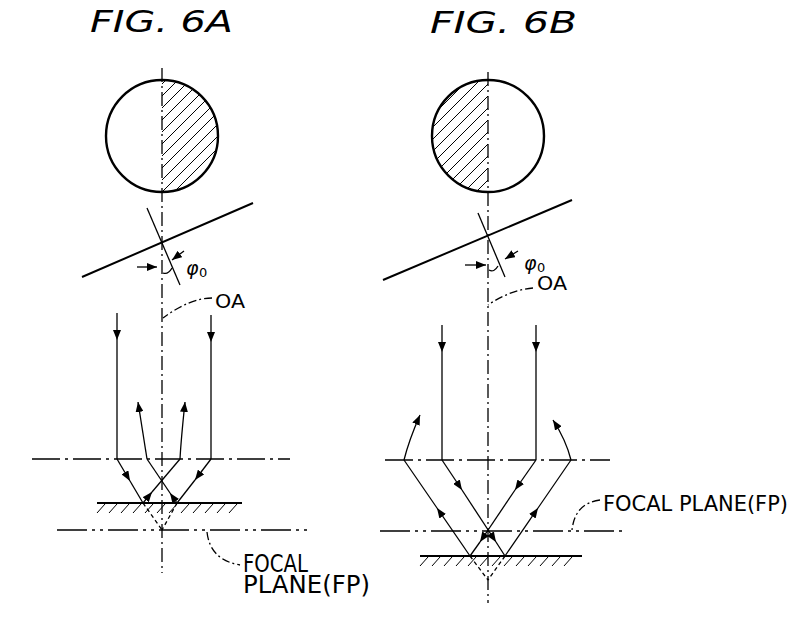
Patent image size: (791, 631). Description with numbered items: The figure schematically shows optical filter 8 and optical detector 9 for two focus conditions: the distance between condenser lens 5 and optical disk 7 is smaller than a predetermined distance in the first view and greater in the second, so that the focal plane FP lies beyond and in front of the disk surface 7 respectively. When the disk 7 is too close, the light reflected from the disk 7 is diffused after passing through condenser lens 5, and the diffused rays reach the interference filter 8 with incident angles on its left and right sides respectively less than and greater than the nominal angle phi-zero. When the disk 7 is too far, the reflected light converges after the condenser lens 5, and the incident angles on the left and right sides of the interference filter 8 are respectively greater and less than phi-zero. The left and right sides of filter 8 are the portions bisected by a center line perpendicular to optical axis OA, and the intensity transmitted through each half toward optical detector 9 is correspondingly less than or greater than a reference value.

In FIG. 6A, the condenser lens 5 is at (63, 455).
In FIG. 6B, the condenser lens 5 is at (592, 458).
In FIG. 6A, the optical disk 7 is at (223, 507).
In FIG. 6B, the optical disk 7 is at (555, 557).
In FIG. 6A, the interference filter 8 is at (92, 270).
In FIG. 6B, the interference filter 8 is at (560, 208).
In FIG. 6A, the optical detector 9 is at (223, 153).
In FIG. 6B, the optical detector 9 is at (558, 142).